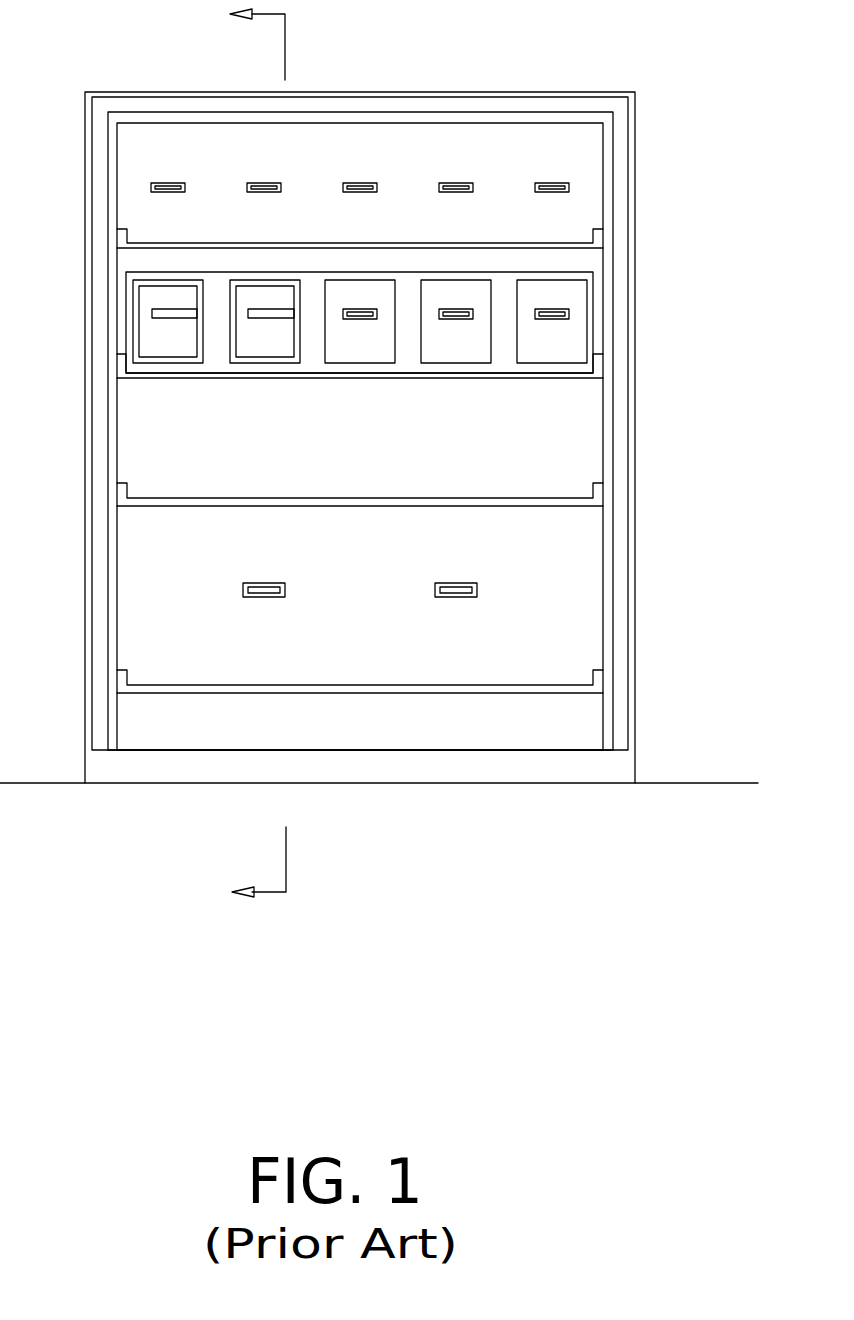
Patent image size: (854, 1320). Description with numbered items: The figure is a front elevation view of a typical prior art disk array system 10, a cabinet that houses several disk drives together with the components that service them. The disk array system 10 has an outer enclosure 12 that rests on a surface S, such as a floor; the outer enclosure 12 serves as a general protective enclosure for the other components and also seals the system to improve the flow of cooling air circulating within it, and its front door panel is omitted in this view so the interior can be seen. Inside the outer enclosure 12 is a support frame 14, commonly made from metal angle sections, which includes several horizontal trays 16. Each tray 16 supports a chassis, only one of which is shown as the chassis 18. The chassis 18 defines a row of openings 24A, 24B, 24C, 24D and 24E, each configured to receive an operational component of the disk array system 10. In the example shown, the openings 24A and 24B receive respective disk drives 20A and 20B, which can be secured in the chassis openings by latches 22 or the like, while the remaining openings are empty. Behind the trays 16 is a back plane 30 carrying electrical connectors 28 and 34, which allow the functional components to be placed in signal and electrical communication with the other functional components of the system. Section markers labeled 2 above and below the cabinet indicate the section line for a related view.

The disk array system 10 is at (687, 44).
The outer enclosure 12 is at (633, 176).
The support frame 14 is at (608, 314).
The tray 16 is at (213, 248).
The chassis 18 is at (407, 279).
The disk drive 20A is at (138, 357).
The disk drive 20B is at (235, 357).
The latch 22 is at (176, 320).
The opening 24A is at (163, 282).
The opening 24B is at (263, 282).
The opening 24C is at (330, 358).
The opening 24D is at (425, 358).
The opening 24E is at (521, 358).
The electrical connector 28 is at (168, 183).
The back plane 30 is at (465, 590).
The electrical connector 34 is at (263, 583).
The surface S is at (693, 783).
The section line 2 is at (270, 454).